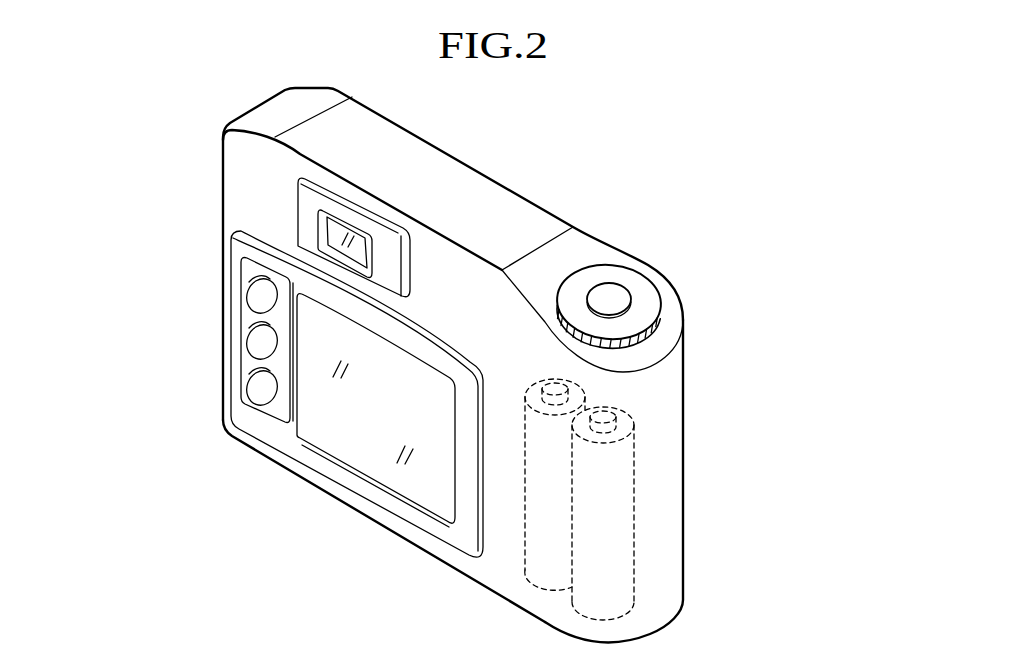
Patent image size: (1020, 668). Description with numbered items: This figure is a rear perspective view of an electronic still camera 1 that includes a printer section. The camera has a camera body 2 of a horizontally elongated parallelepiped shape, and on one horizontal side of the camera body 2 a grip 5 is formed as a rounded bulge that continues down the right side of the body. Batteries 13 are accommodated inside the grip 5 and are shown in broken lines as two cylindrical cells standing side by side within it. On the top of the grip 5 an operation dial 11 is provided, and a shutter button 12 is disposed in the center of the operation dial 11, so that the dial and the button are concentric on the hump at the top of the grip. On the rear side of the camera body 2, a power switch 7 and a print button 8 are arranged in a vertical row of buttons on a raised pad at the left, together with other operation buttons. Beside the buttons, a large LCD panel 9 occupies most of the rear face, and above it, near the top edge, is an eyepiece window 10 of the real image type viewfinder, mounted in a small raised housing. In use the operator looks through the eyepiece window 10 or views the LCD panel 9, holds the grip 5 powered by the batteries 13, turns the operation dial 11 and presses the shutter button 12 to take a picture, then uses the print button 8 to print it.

The electronic still camera 1 is at (584, 180).
The camera body 2 is at (245, 162).
The grip 5 is at (662, 452).
The power switch 7 is at (257, 298).
The print button 8 is at (265, 348).
The LCD panel 9 is at (370, 433).
The eyepiece window 10 is at (337, 228).
The operation dial 11 is at (633, 290).
The shutter button 12 is at (603, 303).
The batteries 13 is at (635, 552).